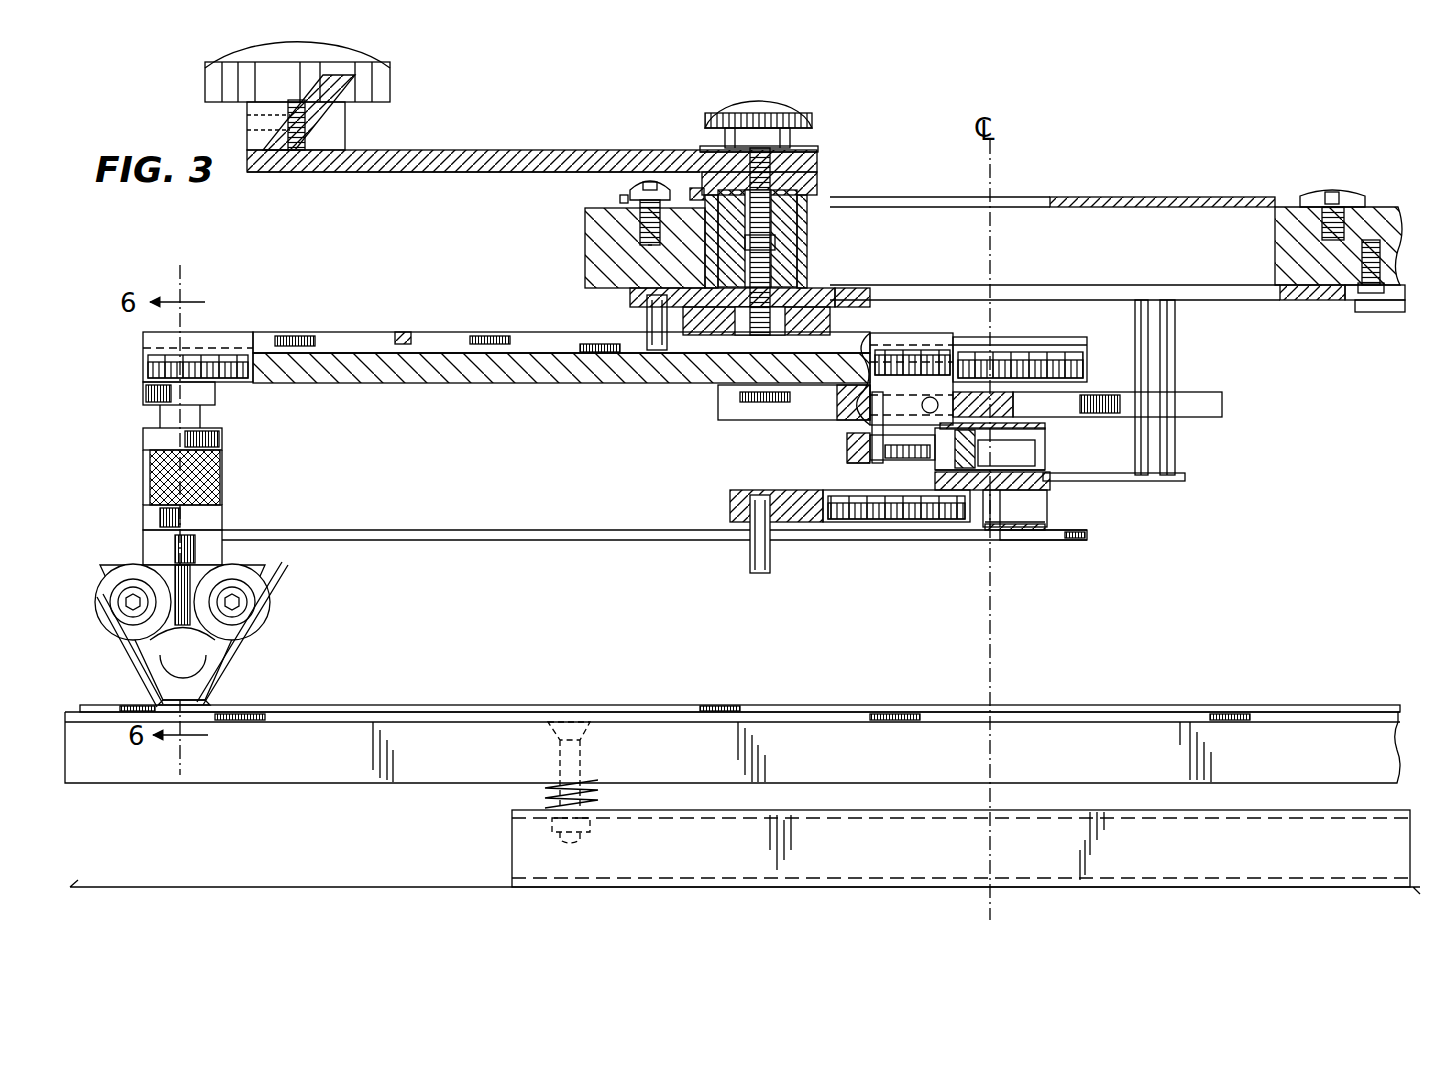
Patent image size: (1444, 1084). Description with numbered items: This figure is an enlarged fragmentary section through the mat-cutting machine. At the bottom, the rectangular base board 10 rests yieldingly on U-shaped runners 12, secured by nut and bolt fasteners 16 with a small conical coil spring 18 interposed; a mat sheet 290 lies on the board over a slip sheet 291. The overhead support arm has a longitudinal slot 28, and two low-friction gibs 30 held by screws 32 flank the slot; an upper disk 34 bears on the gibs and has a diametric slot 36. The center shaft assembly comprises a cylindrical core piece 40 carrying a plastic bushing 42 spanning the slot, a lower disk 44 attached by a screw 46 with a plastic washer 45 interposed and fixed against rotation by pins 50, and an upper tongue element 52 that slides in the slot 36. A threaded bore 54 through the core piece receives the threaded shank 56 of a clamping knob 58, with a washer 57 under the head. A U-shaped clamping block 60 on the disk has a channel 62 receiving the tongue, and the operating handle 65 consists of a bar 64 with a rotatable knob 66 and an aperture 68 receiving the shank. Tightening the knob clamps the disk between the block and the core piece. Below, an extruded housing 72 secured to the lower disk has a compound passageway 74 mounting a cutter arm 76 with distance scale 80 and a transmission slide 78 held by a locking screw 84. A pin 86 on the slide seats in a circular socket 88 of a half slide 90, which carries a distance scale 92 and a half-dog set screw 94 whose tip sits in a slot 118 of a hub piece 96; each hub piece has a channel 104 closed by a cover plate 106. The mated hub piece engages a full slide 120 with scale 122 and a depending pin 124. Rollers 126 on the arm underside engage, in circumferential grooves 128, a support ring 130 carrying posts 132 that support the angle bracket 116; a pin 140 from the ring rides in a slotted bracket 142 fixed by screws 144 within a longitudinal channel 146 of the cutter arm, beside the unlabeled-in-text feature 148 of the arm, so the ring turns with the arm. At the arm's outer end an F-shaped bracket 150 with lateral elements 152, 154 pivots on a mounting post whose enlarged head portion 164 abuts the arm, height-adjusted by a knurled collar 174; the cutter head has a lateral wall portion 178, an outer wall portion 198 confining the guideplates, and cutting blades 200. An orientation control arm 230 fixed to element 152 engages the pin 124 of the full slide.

The base board 10 is at (655, 737).
The U-shaped runners 12 is at (523, 840).
The nut and bolt fasteners 16 is at (568, 722).
The conical coil spring 18 is at (594, 797).
The slot 28 is at (1262, 223).
The gibs 30 is at (622, 196).
The screws 32 is at (646, 180).
The upper disk 34 is at (1136, 193).
The slot 36 is at (1045, 197).
The core piece 40 is at (808, 240).
The plastic bushing 42 is at (805, 275).
The lower disk 44 is at (850, 295).
The plastic washer 45 is at (756, 321).
The screw 46 is at (700, 280).
The pins 50 is at (775, 250).
The tongue element 52 is at (800, 192).
The threaded bore 54 is at (771, 232).
The threaded shank 56 is at (818, 152).
The washer 57 is at (750, 100).
The clamping knob 58 is at (782, 100).
The clamping block 60 is at (818, 168).
The channel 62 is at (698, 186).
The bar 64 is at (547, 152).
The operating handle 65 is at (365, 176).
The knob 66 is at (385, 78).
The aperture 68 is at (780, 144).
The housing 72 is at (712, 431).
The compound passageway 74 is at (864, 332).
The cutter arm 76 is at (1088, 362).
The transmission slide 78 is at (1228, 402).
The distance scale 80 is at (240, 360).
The locking screw 84 is at (936, 397).
The pin 86 is at (853, 447).
The circular socket 88 is at (855, 464).
The half slide 90 is at (846, 452).
The distance scale 92 is at (915, 463).
The half-dog set screw 94 is at (958, 450).
The hub piece 96 is at (1058, 462).
The channel 104 is at (1048, 443).
The cover plate 106 is at (1046, 430).
The angle bracket 116 is at (1192, 478).
The slot 118 is at (1018, 508).
The full slide 120 is at (730, 497).
The scale 122 is at (878, 524).
The pin 124 is at (754, 574).
The rollers 126 is at (1360, 302).
The circumferential grooves 128 is at (1396, 302).
The support ring 130 is at (1316, 300).
The posts 132 is at (1062, 541).
The pin 140 is at (647, 316).
The bracket 142 is at (403, 336).
The screws 144 is at (710, 385).
The longitudinal channel 146 is at (323, 352).
The plate surface 148 is at (437, 350).
The F-shaped bracket 150 is at (238, 508).
The lower bracket element 152 is at (148, 517).
The upper bracket element 154 is at (148, 437).
The enlarged head portion 164 is at (213, 395).
The knurled collar 174 is at (200, 467).
The lateral wall portion 178 is at (250, 650).
The outer wall portion 198 is at (222, 687).
The cutting blade 200 is at (286, 573).
The orientation control arm 230 is at (560, 526).
The mat sheet 290 is at (112, 705).
The slip sheet 291 is at (418, 705).